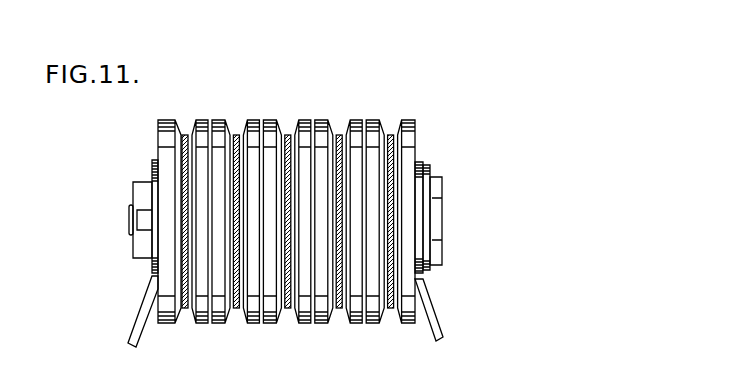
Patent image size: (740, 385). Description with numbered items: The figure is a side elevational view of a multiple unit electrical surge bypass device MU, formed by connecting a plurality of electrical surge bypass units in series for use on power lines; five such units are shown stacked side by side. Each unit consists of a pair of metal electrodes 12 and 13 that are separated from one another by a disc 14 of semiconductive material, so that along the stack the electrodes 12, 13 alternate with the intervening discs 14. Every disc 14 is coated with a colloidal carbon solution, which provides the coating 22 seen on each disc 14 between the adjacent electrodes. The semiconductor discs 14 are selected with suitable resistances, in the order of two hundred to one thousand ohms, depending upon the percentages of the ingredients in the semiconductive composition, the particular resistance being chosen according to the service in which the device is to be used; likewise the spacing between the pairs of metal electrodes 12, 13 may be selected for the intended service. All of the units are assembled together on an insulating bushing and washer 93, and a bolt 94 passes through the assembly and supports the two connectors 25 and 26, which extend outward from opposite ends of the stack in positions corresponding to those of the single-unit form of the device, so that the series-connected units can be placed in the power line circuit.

The multiple unit electrical surge bypass device MU is at (158, 141).
The metal electrode 12 is at (373, 119).
The metal electrode 13 is at (405, 119).
The disc 14 is at (391, 134).
The coating 22 is at (391, 312).
The connector 25 is at (132, 334).
The connector 26 is at (444, 328).
The insulating bushing and washer 93 is at (431, 170).
The bolt 94 is at (438, 220).